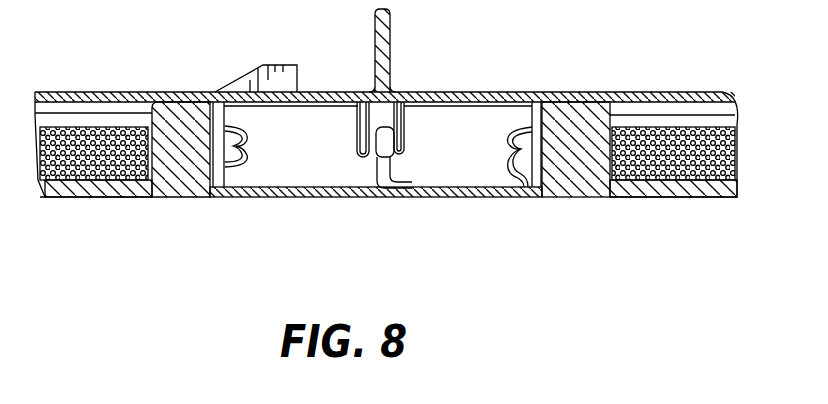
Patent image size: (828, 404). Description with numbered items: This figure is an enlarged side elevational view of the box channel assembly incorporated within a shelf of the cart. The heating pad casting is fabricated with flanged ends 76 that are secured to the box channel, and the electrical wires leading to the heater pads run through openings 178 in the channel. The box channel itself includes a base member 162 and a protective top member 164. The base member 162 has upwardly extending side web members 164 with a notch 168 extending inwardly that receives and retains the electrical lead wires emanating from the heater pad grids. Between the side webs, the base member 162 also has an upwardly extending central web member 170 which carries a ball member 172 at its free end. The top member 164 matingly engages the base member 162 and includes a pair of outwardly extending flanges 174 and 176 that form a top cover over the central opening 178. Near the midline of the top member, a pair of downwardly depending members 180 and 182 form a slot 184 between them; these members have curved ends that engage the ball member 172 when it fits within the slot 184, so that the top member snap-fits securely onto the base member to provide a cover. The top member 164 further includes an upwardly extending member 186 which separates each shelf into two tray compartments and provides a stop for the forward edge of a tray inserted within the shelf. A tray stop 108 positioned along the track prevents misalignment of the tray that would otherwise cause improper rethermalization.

The flanged end 76 is at (580, 180).
The tray stop 108 is at (262, 63).
The base member 162 is at (382, 198).
The top member 164 is at (493, 95).
The notch 168 is at (505, 198).
The central web member 170 is at (410, 198).
The ball member 172 is at (403, 147).
The outwardly extending flange 174 is at (203, 97).
The outwardly extending flange 176 is at (337, 92).
The opening 178 is at (335, 115).
The downwardly depending member 180 is at (357, 112).
The downwardly depending member 182 is at (467, 192).
The slot 184 is at (382, 118).
The upwardly extending member 186 is at (392, 22).